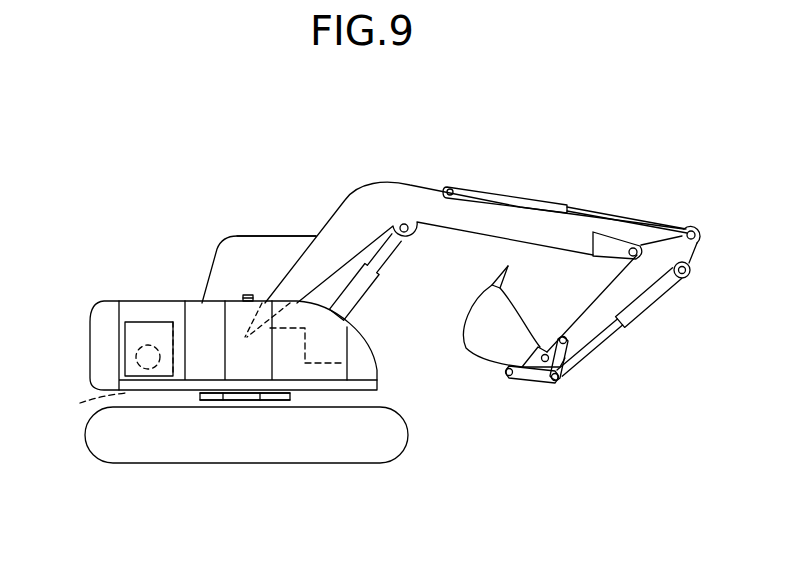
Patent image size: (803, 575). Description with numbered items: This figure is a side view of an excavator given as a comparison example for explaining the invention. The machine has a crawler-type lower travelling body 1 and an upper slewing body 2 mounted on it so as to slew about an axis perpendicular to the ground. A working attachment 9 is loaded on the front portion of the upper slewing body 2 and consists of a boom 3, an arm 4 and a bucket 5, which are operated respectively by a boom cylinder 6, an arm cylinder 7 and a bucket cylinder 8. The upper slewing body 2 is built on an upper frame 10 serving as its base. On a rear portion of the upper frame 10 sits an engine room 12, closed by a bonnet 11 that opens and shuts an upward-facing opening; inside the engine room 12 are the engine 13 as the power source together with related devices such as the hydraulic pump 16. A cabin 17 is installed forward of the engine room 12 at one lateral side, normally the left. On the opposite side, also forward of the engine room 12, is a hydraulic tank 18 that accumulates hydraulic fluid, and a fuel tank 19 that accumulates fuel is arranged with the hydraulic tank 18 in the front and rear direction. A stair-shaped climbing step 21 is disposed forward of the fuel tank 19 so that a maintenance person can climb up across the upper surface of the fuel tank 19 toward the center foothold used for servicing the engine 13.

The lower travelling body 1 is at (257, 465).
The upper slewing body 2 is at (225, 233).
The boom 3 is at (353, 205).
The arm 4 is at (625, 287).
The bucket 5 is at (463, 347).
The boom cylinder 6 is at (393, 258).
The arm cylinder 7 is at (530, 190).
The bucket cylinder 8 is at (635, 323).
The working attachment 9 is at (400, 180).
The upper frame 10 is at (172, 392).
The bonnet 11 is at (152, 343).
The engine room 12 is at (128, 312).
The engine 13 is at (124, 368).
The hydraulic pump 16 is at (82, 402).
The cabin 17 is at (265, 235).
The hydraulic tank 18 is at (210, 372).
The fuel tank 19 is at (263, 360).
The climbing step 21 is at (345, 352).